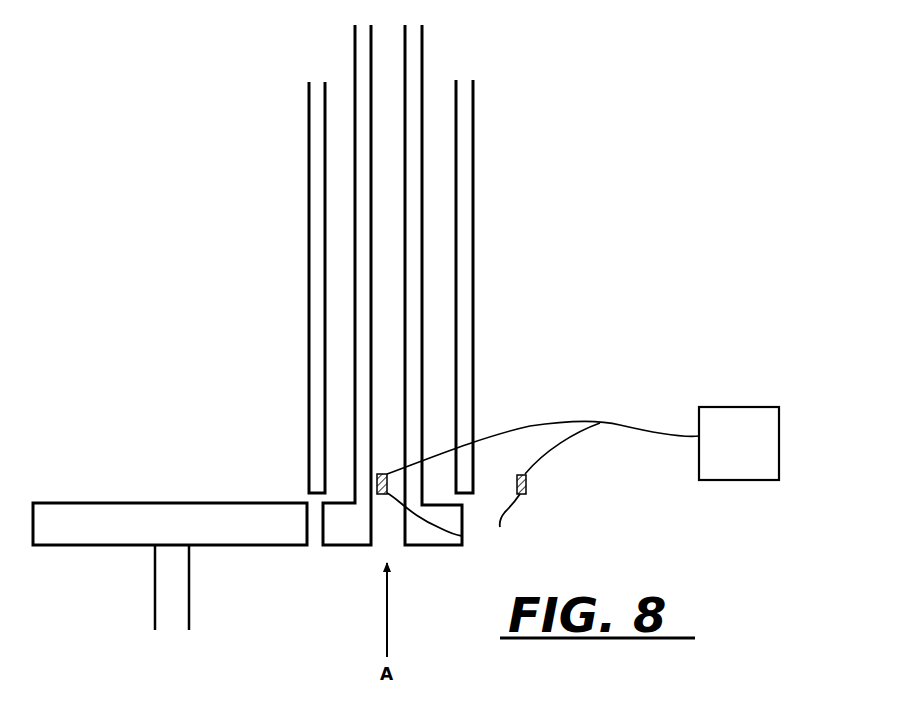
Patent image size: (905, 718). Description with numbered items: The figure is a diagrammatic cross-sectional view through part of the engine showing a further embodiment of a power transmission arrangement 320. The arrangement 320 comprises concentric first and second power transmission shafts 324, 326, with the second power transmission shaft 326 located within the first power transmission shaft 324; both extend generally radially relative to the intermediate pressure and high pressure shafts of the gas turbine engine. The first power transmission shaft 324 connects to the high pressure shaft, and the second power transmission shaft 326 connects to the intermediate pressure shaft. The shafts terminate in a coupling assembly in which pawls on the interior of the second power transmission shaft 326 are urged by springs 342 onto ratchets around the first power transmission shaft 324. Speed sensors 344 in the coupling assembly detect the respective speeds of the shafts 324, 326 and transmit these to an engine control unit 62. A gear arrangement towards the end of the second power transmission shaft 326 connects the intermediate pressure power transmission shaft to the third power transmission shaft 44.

The third power transmission shaft 44 is at (166, 606).
The engine control unit 62 is at (743, 407).
The power transmission arrangement 320 is at (504, 303).
The first power transmission shaft 324 is at (308, 163).
The second power transmission shaft 326 is at (418, 80).
The springs 342 is at (307, 550).
The speed sensors 344 is at (462, 536).